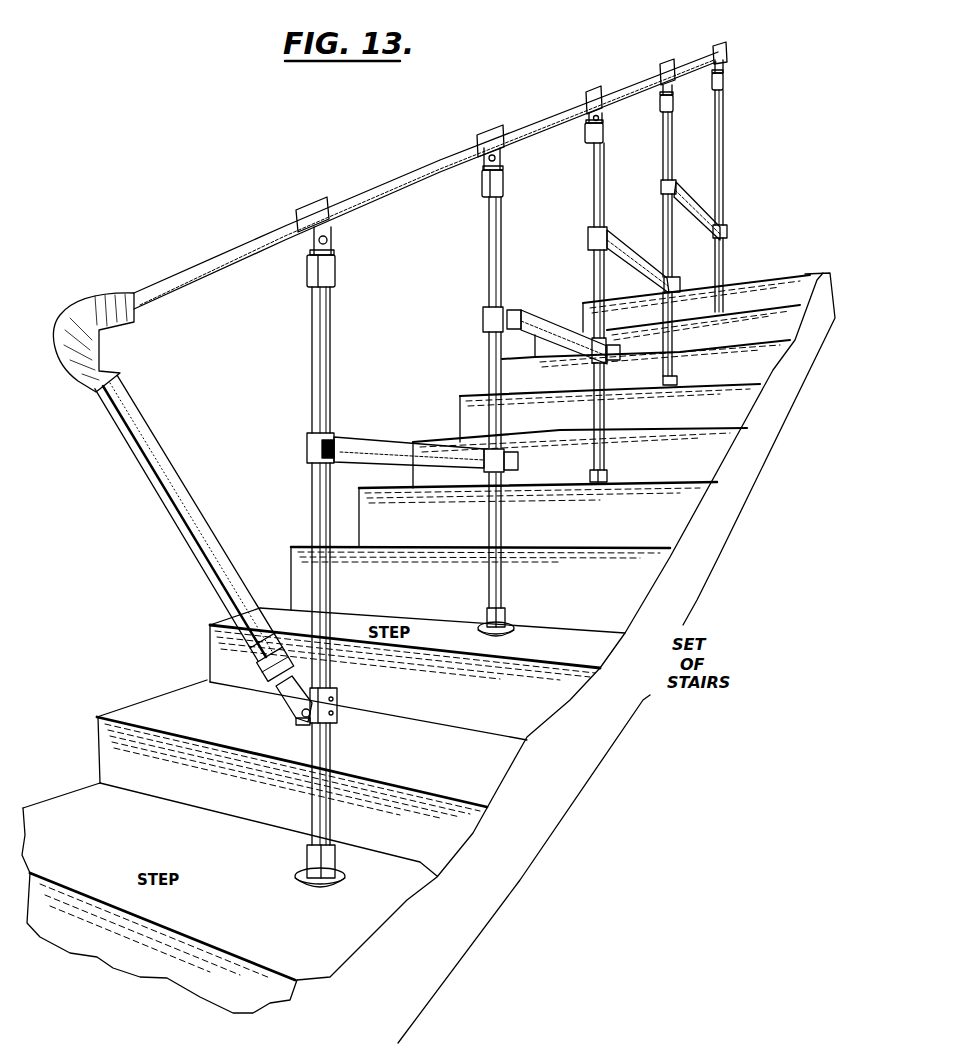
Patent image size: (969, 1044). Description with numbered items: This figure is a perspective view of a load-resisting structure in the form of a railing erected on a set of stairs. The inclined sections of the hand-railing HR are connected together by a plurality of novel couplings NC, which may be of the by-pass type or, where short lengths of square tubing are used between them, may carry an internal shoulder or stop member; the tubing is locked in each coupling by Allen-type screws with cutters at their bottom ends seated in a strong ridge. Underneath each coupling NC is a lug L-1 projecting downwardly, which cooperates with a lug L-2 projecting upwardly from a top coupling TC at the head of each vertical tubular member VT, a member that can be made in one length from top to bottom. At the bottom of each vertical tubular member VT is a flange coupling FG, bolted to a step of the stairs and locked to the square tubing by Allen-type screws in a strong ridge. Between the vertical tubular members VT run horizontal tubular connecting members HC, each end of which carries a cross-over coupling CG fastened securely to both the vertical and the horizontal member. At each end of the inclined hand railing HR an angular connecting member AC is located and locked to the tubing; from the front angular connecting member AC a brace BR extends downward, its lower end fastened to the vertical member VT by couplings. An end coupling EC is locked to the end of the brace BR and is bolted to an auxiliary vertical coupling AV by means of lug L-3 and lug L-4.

The hand-railing HR is at (195, 262).
The vertical tubular member VT is at (312, 332).
The brace BR is at (195, 562).
The angular connecting member AC is at (110, 292).
The coupling NC is at (322, 208).
The top coupling TC is at (305, 283).
The cross-over coupling CG is at (307, 450).
The horizontal tubular connecting member HC is at (384, 447).
The flange coupling FG is at (345, 868).
The end coupling EC is at (270, 682).
The auxiliary vertical coupling AV is at (337, 698).
The lug L-1 is at (331, 239).
The lug L-2 is at (306, 251).
The lug L-3 is at (295, 715).
The lug L-4 is at (300, 725).